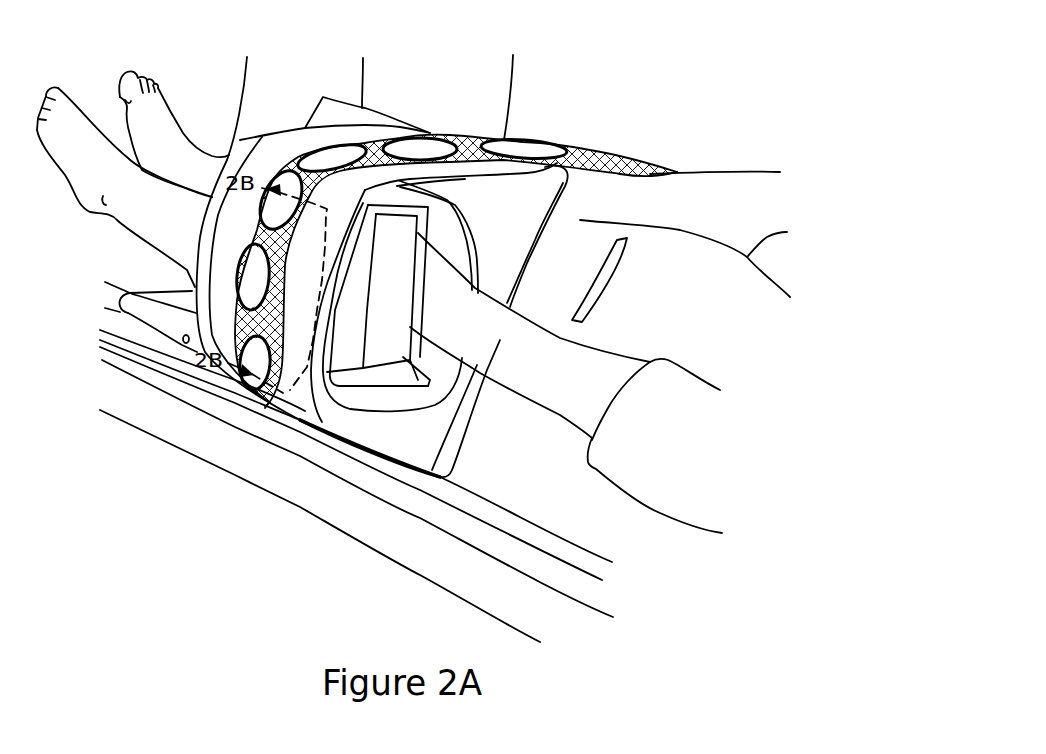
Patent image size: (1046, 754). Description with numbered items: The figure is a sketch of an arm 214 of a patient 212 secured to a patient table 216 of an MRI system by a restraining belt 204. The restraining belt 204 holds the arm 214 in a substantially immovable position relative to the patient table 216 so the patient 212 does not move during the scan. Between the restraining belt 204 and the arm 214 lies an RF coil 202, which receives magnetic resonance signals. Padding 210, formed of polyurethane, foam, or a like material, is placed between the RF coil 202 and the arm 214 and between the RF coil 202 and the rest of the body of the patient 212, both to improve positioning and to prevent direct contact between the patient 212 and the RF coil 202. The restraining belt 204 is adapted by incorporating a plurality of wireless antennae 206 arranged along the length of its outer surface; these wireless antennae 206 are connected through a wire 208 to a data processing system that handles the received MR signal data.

The RF coil 202 is at (355, 403).
The restraining belt 204 is at (267, 152).
The wireless antennae 206 is at (200, 253).
The wire 208 is at (222, 298).
The padding 210 is at (380, 192).
The patient 212 is at (672, 318).
The arm 214 is at (548, 390).
The patient table 216 is at (217, 443).